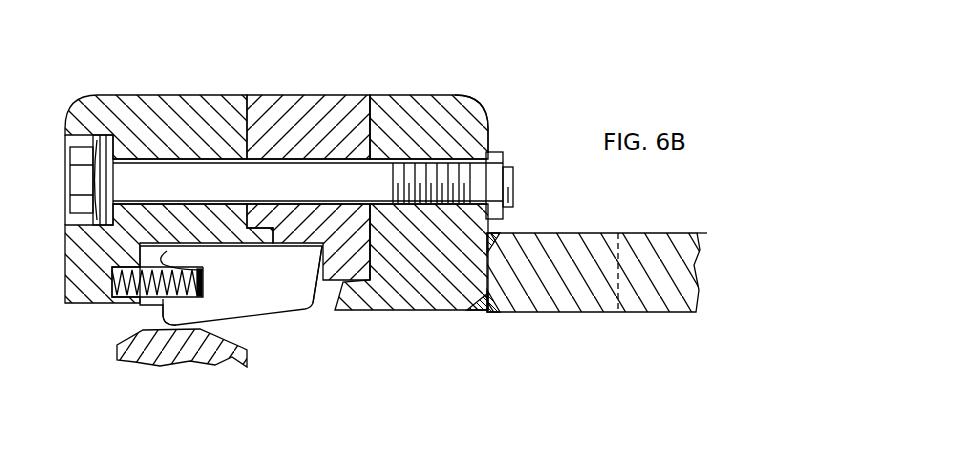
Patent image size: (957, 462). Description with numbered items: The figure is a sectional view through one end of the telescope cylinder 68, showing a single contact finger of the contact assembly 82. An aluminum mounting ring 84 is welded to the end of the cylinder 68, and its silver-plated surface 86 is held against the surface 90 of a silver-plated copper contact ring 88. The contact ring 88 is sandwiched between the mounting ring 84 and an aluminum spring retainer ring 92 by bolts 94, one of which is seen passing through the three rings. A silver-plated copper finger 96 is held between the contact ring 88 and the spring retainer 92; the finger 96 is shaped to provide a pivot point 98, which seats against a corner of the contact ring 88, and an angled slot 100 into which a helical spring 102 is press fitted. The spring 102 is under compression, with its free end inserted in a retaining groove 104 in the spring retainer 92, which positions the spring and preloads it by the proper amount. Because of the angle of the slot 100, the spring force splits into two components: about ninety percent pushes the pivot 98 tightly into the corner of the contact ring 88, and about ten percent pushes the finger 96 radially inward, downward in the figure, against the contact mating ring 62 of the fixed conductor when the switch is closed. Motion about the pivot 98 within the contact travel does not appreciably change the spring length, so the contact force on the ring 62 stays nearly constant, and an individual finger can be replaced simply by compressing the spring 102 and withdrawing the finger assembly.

The contact ring 62 is at (110, 352).
The telescope cylinder 68 is at (581, 233).
The contact assembly 82 is at (385, 339).
The mounting ring 84 is at (490, 105).
The silver-plated surface 86 is at (375, 116).
The contact ring 88 is at (301, 95).
The surface 90 is at (368, 140).
The spring retainer ring 92 is at (184, 95).
The bolts 94 is at (80, 176).
The finger 96 is at (272, 317).
The pivot point 98 is at (318, 248).
The slot 100 is at (175, 257).
The helical spring 102 is at (166, 311).
The retaining groove 104 is at (130, 306).